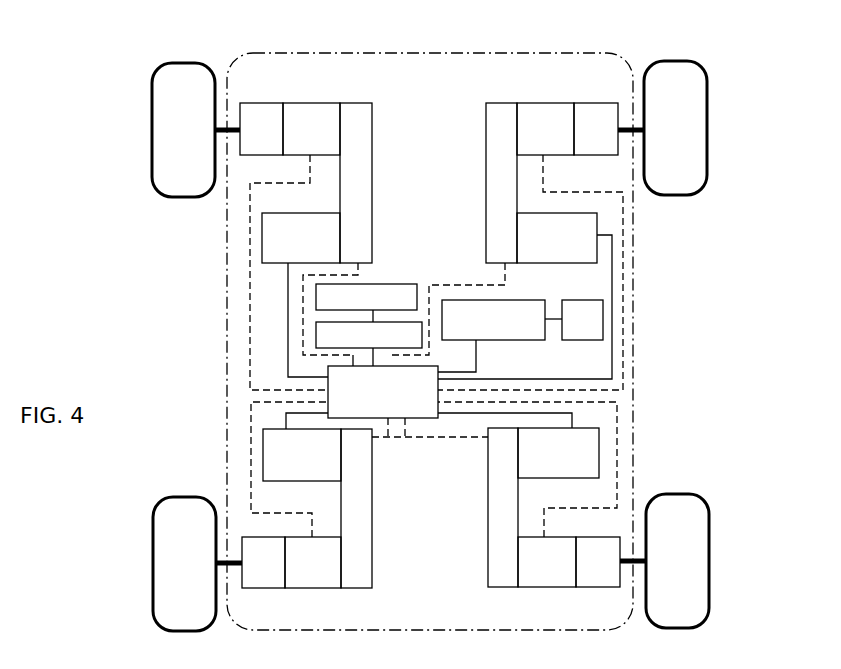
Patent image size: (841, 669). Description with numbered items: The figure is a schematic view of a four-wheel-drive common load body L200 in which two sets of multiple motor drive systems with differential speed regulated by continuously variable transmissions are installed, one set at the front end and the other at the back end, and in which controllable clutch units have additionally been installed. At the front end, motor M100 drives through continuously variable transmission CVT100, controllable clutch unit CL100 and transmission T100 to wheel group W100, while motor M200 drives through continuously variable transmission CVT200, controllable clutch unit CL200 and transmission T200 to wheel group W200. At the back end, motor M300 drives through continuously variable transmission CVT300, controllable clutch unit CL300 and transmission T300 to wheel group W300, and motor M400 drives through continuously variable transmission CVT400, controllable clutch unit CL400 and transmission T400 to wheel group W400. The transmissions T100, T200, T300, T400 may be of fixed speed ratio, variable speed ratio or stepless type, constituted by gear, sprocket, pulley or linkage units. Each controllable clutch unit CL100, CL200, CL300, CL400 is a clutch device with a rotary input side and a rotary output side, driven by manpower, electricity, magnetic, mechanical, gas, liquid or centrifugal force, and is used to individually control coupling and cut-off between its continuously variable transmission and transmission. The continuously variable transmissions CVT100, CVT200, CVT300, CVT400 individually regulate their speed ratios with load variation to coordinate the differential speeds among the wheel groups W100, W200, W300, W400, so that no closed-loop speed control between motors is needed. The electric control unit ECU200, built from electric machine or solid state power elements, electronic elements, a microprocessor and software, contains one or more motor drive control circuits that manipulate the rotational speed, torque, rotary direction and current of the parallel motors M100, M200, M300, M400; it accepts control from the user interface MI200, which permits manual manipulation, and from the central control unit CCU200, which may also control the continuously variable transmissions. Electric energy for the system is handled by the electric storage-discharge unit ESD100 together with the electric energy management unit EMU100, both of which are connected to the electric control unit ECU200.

The common load body L200 is at (227, 352).
The wheel group W100 is at (153, 583).
The wheel group W200 is at (709, 580).
The wheel group W300 is at (152, 151).
The wheel group W400 is at (707, 150).
The transmission T100 is at (262, 578).
The transmission T200 is at (597, 577).
The transmission T300 is at (253, 107).
The transmission T400 is at (606, 103).
The controllable clutch unit CL100 is at (331, 578).
The controllable clutch unit CL200 is at (525, 573).
The controllable clutch unit CL300 is at (328, 112).
The controllable clutch unit CL400 is at (525, 112).
The continuous variable transmission CVT100 is at (373, 573).
The continuous variable transmission CVT200 is at (488, 513).
The continuous variable transmission CVT300 is at (372, 170).
The continuous variable transmission CVT400 is at (486, 235).
The motor M100 is at (302, 455).
The motor M200 is at (558, 453).
The motor M300 is at (301, 238).
The motor M400 is at (557, 238).
The electric storage-discharge unit ESD100 is at (366, 297).
The electric energy management unit EMU100 is at (369, 335).
The central control unit CCU200 is at (493, 320).
The user interface MI200 is at (590, 332).
The electric control unit ECU200 is at (383, 392).